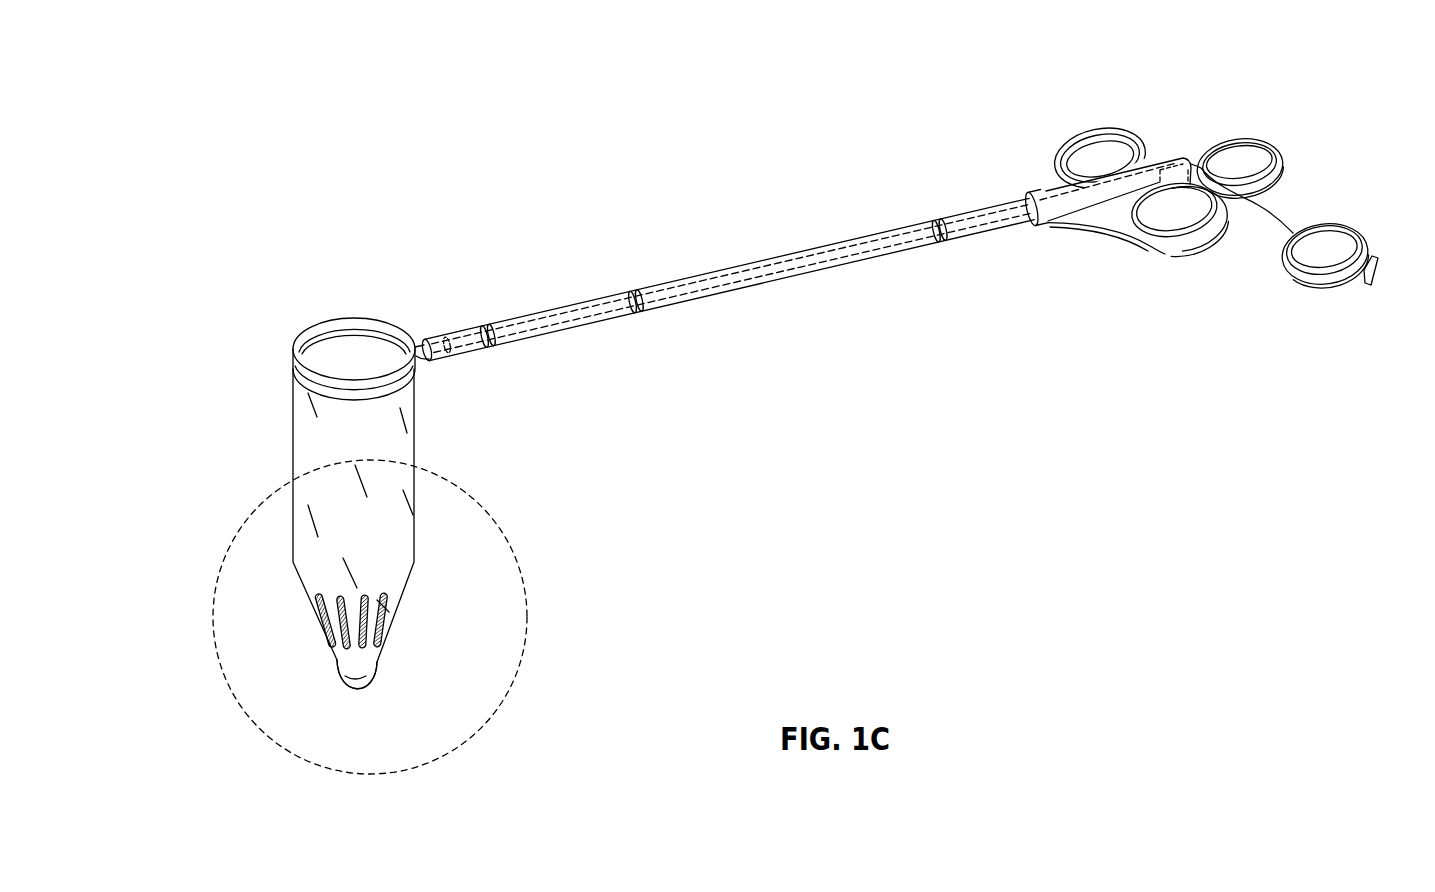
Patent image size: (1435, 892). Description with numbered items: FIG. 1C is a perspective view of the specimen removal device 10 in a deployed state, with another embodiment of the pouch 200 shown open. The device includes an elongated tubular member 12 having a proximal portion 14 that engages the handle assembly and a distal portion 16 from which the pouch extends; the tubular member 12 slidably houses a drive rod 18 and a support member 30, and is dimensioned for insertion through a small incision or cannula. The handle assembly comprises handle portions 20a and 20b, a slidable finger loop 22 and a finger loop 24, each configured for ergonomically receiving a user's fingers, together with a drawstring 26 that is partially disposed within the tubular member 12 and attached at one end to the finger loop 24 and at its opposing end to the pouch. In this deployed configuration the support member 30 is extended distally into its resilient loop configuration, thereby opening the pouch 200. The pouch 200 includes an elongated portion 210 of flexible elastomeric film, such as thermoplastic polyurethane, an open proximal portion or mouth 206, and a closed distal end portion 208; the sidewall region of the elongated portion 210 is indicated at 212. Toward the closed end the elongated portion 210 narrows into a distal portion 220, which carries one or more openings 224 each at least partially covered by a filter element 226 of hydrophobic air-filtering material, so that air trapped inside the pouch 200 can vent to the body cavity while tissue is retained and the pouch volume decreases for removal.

The specimen removal device 10 is at (654, 179).
The elongated tubular member 12 is at (781, 257).
The proximal portion 14 is at (1024, 198).
The distal portion 16 is at (456, 339).
The drive rod 18 is at (572, 310).
The handle portion 20a is at (1076, 134).
The handle portion 20b is at (1192, 237).
The slidable finger loop 22 is at (1283, 152).
The finger loop 24 is at (1338, 231).
The drawstring 26 is at (1272, 213).
The support member 30 is at (400, 399).
The pouch 200 is at (270, 455).
The open proximal portion or mouth 206 is at (323, 355).
The closed distal end portion 208 is at (351, 672).
The elongated portion 210 is at (373, 453).
The bag sidewall 212 is at (407, 540).
The distal portion 220 is at (384, 672).
The openings 224 is at (316, 628).
The filter element 226 is at (387, 613).